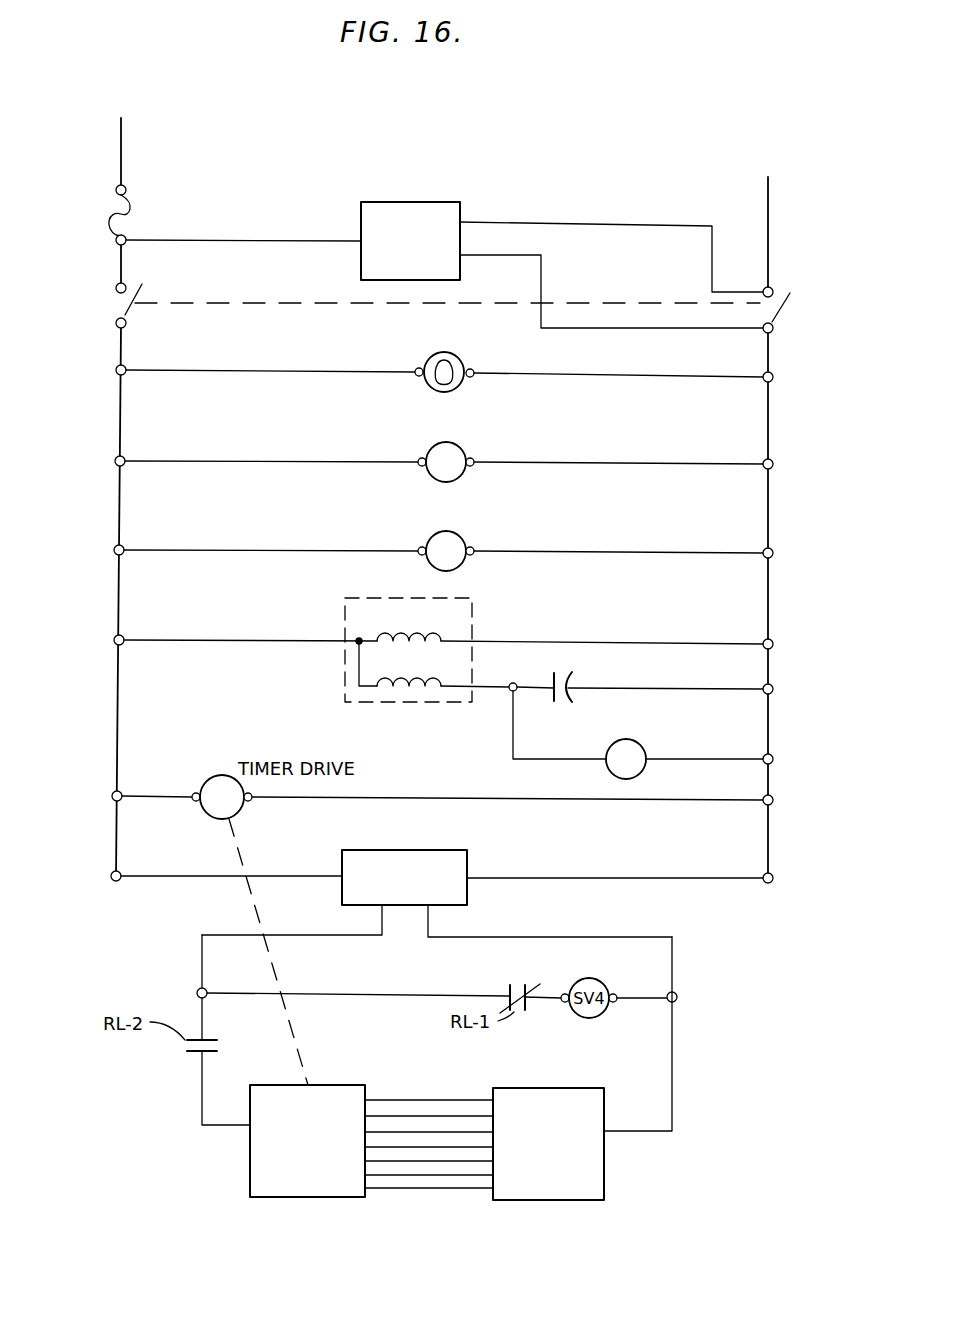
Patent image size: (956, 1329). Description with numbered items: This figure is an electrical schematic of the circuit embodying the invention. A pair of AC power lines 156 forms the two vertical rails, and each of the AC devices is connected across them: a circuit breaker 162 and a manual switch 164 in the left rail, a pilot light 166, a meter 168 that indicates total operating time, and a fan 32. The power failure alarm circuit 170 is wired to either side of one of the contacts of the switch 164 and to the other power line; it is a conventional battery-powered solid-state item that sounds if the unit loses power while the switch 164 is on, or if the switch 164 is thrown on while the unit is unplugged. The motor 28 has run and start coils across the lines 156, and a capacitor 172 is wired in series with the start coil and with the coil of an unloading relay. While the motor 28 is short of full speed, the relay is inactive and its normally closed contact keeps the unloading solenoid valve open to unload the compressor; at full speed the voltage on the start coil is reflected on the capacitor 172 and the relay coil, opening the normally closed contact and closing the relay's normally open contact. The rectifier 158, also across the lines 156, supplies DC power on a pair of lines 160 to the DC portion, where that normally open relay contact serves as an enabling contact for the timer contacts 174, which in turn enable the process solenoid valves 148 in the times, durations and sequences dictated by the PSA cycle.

The AC power lines 156 is at (120, 155).
The circuit breaker 162 is at (106, 213).
The manual switch 164 is at (106, 298).
The power failure alarm circuit 170 is at (348, 226).
The pilot light 166 is at (414, 352).
The meter 168 is at (428, 452).
The fan 32 is at (432, 536).
The motor 28 is at (331, 606).
The capacitor 172 is at (563, 703).
The rectifier 158 is at (342, 862).
The DC lines 160 is at (447, 940).
The timer contacts 174 is at (316, 1198).
The process solenoid valves 148 is at (527, 1187).